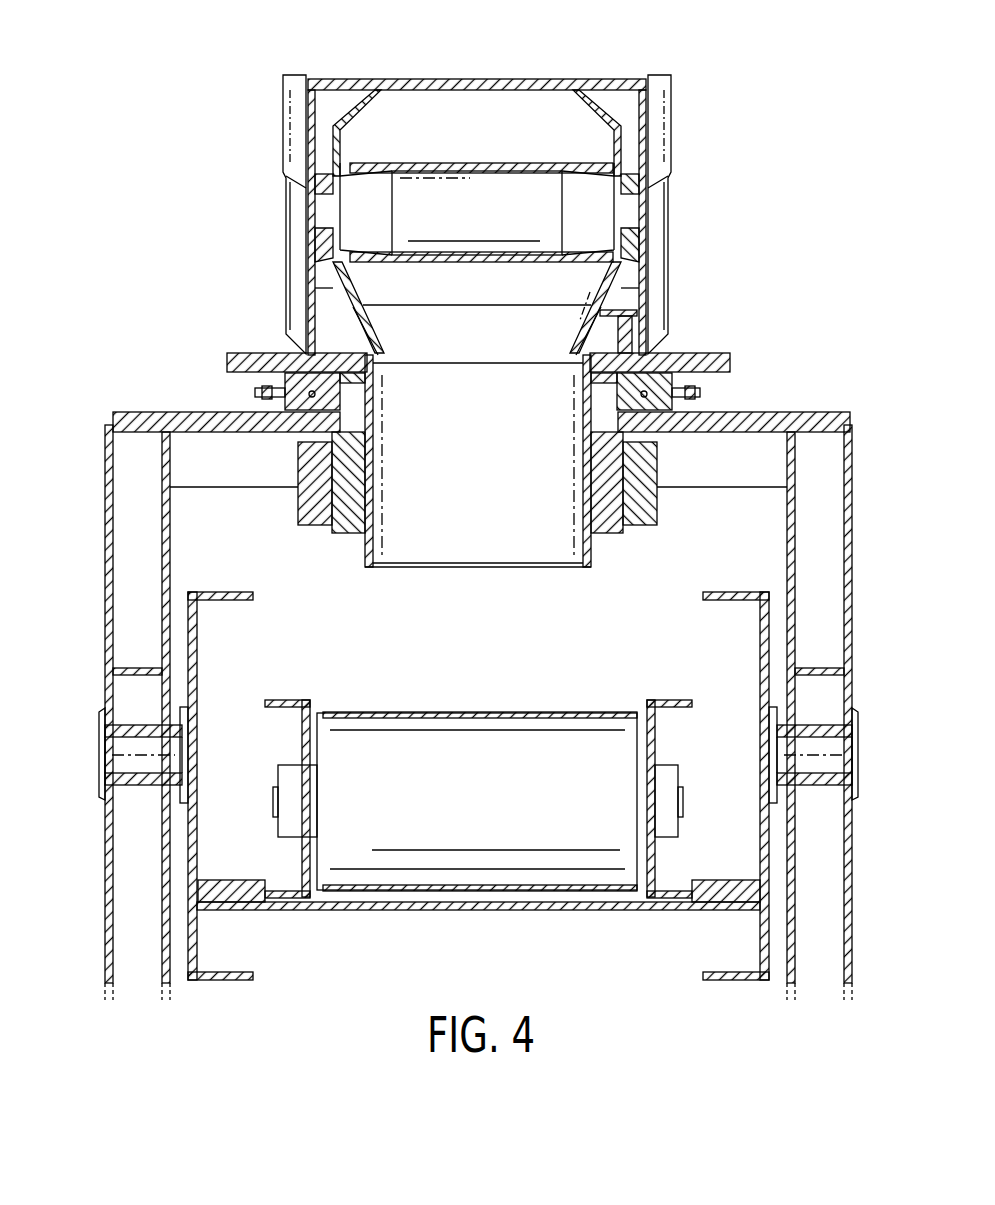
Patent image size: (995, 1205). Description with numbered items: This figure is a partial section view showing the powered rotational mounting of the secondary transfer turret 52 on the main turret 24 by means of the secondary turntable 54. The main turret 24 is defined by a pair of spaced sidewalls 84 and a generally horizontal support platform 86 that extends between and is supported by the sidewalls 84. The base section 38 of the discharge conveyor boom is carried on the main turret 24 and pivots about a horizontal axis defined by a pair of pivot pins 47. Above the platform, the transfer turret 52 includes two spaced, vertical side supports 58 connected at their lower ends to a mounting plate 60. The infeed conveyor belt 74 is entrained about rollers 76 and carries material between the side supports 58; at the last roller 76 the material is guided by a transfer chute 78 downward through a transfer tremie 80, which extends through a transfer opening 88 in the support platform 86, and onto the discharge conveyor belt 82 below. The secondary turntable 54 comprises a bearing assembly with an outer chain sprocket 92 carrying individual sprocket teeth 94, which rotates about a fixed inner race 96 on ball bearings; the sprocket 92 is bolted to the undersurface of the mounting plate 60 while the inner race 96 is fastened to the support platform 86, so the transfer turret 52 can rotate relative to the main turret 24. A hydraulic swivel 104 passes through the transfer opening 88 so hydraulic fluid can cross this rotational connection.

The main turret 24 is at (860, 481).
The base section 38 is at (198, 642).
The pivot pins 47 is at (99, 750).
The secondary transfer turret 52 is at (686, 129).
The secondary turntable 54 is at (745, 363).
The side supports 58 is at (312, 205).
The mounting plate 60 is at (690, 360).
The infeed conveyor belt 74 is at (478, 256).
The rollers 76 is at (487, 188).
The transfer chute 78 is at (353, 101).
The transfer tremie 80 is at (432, 545).
The discharge conveyor belt 82 is at (481, 713).
The sidewalls 84 is at (105, 549).
The support platform 86 is at (153, 412).
The transfer opening 88 is at (590, 400).
The chain sprocket 92 is at (290, 403).
The sprocket teeth 94 is at (700, 393).
The inner race 96 is at (324, 382).
The hydraulic swivel 104 is at (341, 525).